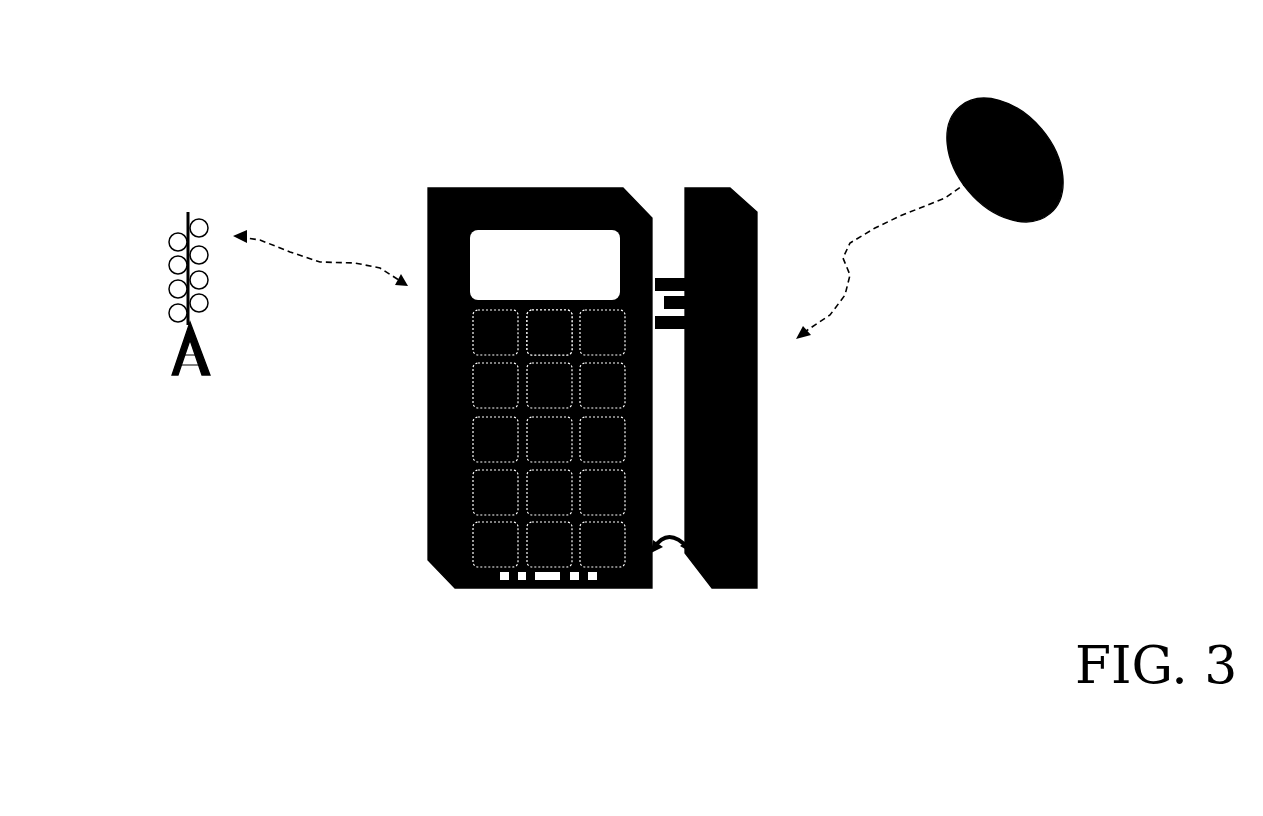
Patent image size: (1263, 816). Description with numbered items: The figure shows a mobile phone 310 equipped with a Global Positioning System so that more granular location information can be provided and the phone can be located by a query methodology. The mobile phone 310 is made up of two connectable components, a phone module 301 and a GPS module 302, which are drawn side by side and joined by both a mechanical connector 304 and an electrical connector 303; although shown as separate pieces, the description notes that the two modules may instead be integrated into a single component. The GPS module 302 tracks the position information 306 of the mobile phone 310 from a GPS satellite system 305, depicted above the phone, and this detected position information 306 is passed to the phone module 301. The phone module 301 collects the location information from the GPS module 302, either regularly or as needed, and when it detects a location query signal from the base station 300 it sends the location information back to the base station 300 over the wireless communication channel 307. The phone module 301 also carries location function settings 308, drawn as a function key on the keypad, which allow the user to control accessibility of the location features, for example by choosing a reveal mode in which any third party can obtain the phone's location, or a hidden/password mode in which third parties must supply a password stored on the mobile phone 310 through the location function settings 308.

The base station 300 is at (208, 342).
The phone module 301 is at (540, 344).
The GPS module 302 is at (762, 507).
The electrical connector 303 is at (708, 613).
The mechanical connector 304 is at (672, 262).
The GPS satellite system 305 is at (1005, 196).
The position information 306 is at (882, 289).
The wireless communication channel 307 is at (320, 216).
The location function settings 308 is at (540, 340).
The mobile phone 310 is at (702, 72).